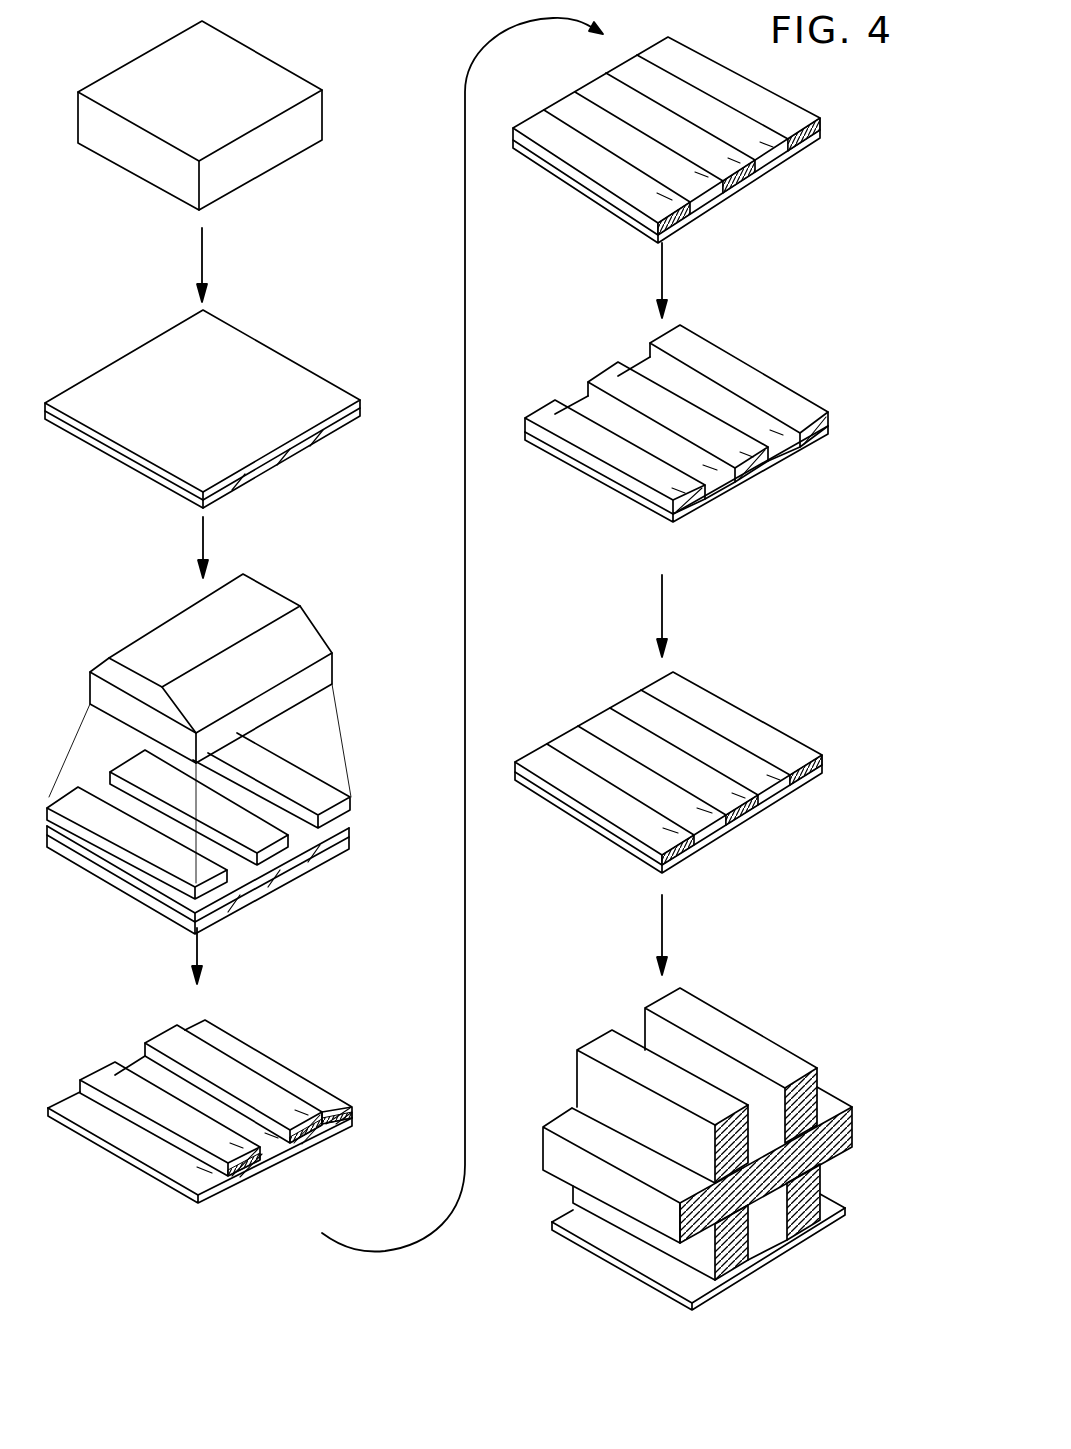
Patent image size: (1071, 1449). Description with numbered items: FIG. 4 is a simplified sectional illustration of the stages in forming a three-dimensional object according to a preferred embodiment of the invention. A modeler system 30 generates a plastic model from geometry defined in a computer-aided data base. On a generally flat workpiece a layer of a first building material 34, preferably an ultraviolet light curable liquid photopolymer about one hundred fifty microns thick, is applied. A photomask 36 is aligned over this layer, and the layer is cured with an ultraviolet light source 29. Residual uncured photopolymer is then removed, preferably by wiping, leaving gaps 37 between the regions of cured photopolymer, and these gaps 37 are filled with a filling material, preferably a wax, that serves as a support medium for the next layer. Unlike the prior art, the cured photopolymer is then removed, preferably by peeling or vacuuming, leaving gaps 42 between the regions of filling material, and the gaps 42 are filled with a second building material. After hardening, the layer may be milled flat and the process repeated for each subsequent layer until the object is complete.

The ultraviolet light source 29 is at (310, 650).
The modeler system 30 is at (302, 128).
The first building material 34 is at (247, 409).
The photomask 36 is at (323, 793).
The gaps 37 is at (244, 1139).
The gaps 42 is at (795, 447).